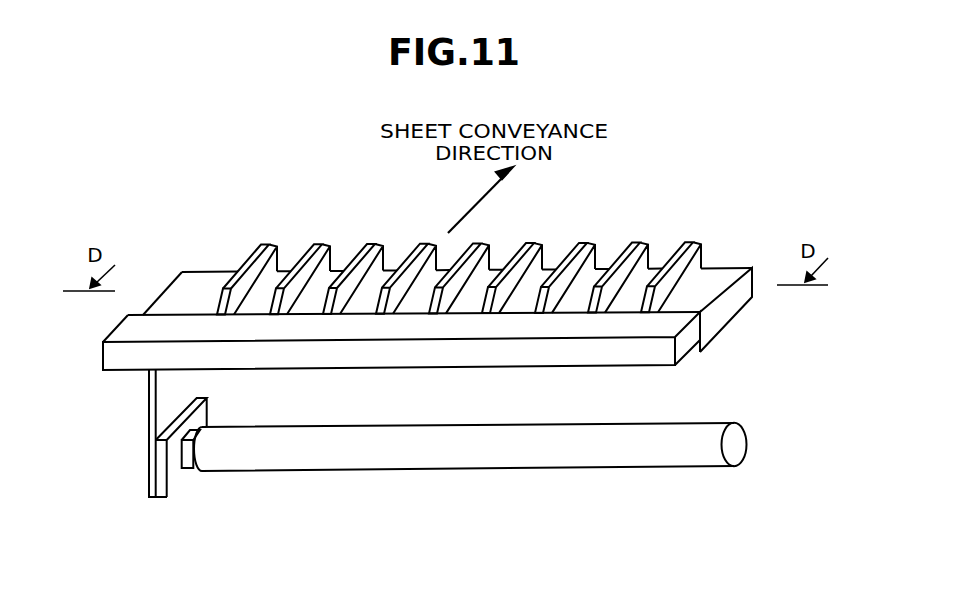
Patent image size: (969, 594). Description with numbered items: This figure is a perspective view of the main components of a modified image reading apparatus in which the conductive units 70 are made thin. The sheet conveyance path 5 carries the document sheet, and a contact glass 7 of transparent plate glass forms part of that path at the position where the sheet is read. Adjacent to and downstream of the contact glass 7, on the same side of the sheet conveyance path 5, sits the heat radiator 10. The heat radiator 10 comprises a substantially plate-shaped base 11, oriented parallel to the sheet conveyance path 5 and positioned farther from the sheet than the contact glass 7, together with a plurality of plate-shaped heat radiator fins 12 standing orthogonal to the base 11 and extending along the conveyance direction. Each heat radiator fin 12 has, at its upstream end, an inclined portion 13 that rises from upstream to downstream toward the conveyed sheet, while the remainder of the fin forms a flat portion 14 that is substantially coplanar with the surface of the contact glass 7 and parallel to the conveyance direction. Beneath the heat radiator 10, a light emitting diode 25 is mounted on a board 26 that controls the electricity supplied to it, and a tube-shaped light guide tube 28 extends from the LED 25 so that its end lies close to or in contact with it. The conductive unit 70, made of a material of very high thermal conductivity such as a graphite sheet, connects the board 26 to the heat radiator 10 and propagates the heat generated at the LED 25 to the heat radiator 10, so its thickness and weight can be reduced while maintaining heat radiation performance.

The sheet conveyance path 5 is at (118, 329).
The contact glass 7 is at (103, 362).
The heat radiator 10 is at (166, 285).
The base 11 is at (737, 266).
The heat radiator fin 12 is at (700, 242).
The inclined portion 13 is at (222, 298).
The flat portion 14 is at (270, 248).
The light emitting diode 25 is at (193, 472).
The board 26 is at (189, 458).
The light guide tube 28 is at (433, 471).
The conductive unit 70 is at (150, 438).